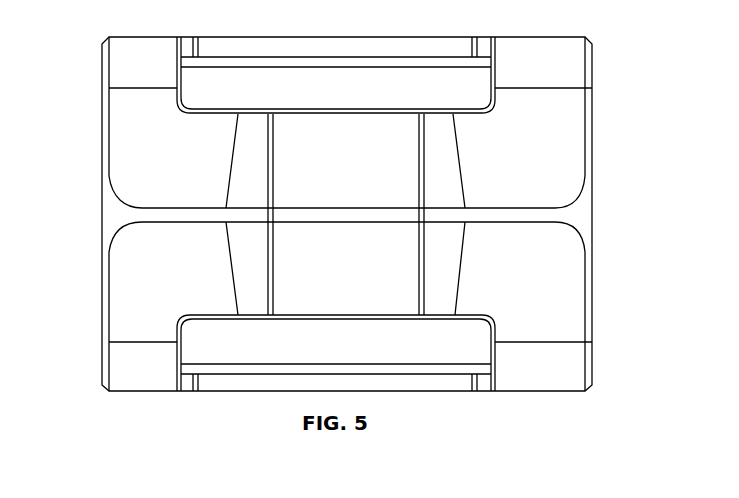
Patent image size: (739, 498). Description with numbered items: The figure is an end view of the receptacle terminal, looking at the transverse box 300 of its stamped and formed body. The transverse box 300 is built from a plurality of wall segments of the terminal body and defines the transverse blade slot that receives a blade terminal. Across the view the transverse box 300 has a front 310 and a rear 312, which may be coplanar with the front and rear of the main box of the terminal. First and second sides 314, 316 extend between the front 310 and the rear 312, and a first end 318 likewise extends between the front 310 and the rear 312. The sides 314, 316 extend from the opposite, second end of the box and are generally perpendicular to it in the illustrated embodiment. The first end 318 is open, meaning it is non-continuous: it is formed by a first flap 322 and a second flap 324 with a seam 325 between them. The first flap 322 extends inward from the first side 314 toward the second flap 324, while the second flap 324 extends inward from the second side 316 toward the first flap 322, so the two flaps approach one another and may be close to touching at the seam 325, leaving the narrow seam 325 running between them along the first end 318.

The transverse box 300 is at (570, 109).
The front 310 is at (592, 158).
The rear 312 is at (102, 152).
The first side 314 is at (540, 37).
The second side 316 is at (537, 392).
The first end 318 is at (533, 268).
The first flap 322 is at (558, 148).
The second flap 324 is at (555, 297).
The seam 325 is at (564, 213).